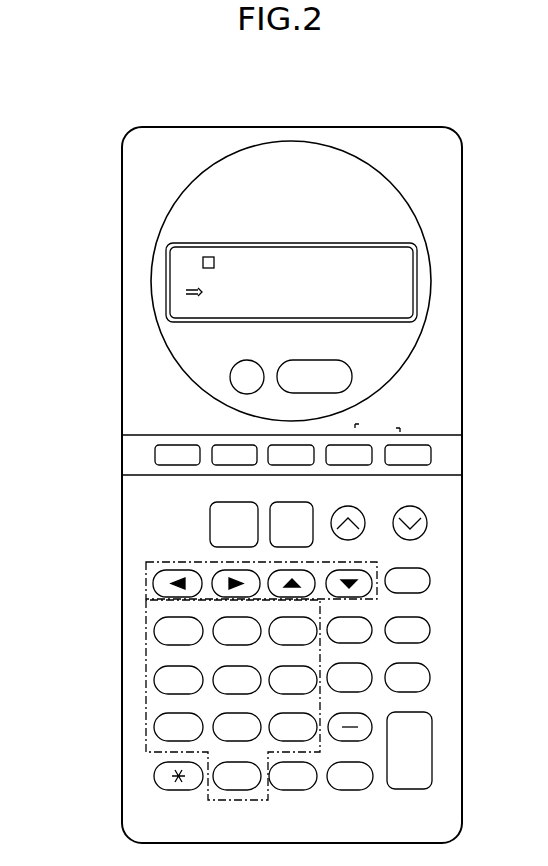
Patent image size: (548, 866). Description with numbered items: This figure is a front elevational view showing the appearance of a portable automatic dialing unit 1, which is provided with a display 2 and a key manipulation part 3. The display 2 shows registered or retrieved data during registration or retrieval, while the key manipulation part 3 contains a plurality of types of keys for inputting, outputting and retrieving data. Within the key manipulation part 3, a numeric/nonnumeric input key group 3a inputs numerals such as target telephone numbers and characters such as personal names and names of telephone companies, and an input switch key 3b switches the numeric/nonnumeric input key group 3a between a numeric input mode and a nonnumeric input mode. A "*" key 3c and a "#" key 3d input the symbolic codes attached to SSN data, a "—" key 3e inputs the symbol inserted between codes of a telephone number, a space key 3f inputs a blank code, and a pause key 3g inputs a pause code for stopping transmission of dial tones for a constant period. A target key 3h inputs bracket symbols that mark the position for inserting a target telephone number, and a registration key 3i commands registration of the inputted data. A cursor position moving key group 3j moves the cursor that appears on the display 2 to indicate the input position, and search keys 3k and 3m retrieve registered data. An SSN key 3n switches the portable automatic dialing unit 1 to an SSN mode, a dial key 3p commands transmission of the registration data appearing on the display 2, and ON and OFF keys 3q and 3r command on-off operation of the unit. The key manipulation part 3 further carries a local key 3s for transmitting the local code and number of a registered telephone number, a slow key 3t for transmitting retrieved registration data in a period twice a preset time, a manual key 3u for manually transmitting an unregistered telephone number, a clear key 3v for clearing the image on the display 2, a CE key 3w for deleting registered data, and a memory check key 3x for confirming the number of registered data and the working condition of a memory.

The portable automatic dialing unit 1 is at (426, 116).
The display 2 is at (417, 270).
The key manipulation part 3 is at (420, 395).
The numeric/nonnumeric input key group 3a is at (146, 683).
The input switch key 3b is at (210, 536).
The "*" key 3c is at (166, 792).
The "#" key 3d is at (296, 792).
The "—" key 3e is at (350, 742).
The space key 3f is at (350, 792).
The pause key 3g is at (350, 693).
The target key 3h is at (350, 644).
The registration key 3i is at (412, 790).
The cursor position moving key group 3j is at (146, 578).
The search key 3k is at (356, 536).
The search key 3m is at (421, 536).
The SSN key 3n is at (230, 372).
The dial key 3p is at (343, 375).
The ON key 3q is at (420, 466).
The OFF key 3r is at (335, 466).
The local key 3s is at (162, 466).
The slow key 3t is at (218, 466).
The manual key 3u is at (275, 466).
The clear key 3v is at (420, 594).
The CE key 3w is at (420, 644).
The memory check key 3x is at (420, 693).